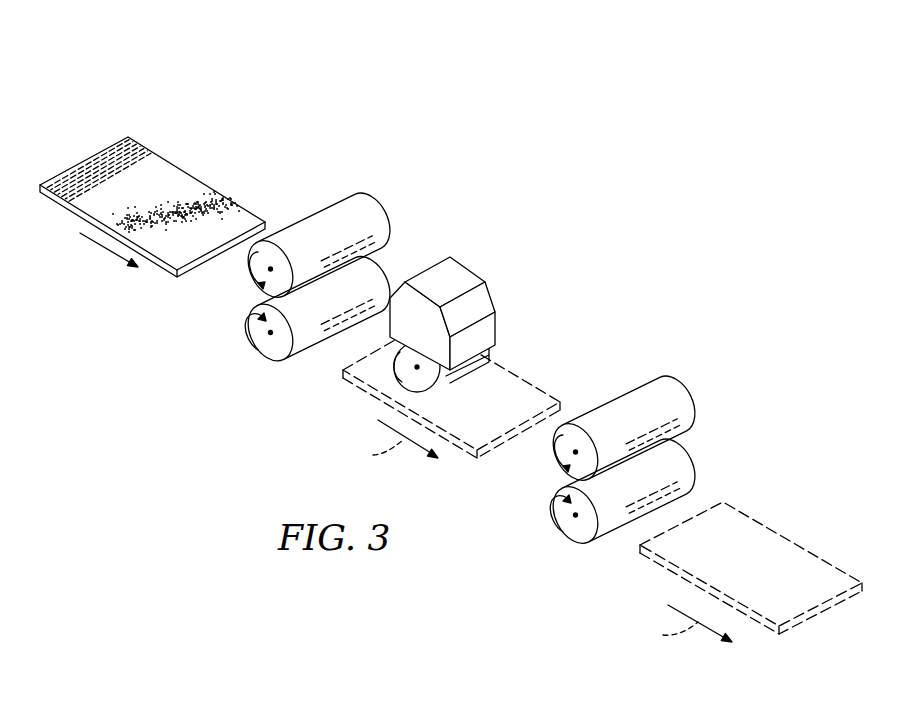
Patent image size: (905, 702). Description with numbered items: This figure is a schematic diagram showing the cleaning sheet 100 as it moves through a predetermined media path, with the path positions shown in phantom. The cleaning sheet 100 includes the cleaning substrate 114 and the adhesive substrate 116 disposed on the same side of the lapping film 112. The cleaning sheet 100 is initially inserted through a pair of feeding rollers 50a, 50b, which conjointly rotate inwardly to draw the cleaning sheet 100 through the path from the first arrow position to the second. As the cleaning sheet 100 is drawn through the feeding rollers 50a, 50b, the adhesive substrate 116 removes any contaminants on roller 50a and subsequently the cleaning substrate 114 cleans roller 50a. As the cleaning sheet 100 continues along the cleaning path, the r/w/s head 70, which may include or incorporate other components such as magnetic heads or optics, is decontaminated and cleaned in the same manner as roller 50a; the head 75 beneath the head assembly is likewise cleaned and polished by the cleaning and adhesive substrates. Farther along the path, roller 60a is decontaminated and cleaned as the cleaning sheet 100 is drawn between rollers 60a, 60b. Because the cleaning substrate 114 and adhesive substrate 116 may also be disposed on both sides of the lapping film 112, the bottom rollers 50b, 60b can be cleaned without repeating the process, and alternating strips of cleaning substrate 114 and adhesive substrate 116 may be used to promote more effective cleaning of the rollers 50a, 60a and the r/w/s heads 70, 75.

The cleaning sheet 100 is at (441, 353).
The lapping film 112 is at (53, 200).
The cleaning substrate 114 is at (68, 180).
The adhesive substrate 116 is at (222, 203).
The feeding roller 50a is at (349, 200).
The feeding roller 50b is at (270, 352).
The r/w/s head 70 is at (458, 266).
The r/w/s head 75 is at (400, 367).
The roller 60a is at (663, 385).
The roller 60b is at (580, 537).